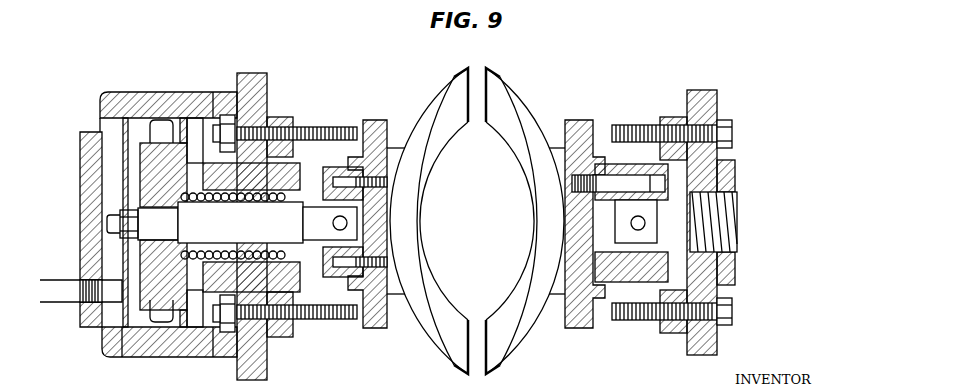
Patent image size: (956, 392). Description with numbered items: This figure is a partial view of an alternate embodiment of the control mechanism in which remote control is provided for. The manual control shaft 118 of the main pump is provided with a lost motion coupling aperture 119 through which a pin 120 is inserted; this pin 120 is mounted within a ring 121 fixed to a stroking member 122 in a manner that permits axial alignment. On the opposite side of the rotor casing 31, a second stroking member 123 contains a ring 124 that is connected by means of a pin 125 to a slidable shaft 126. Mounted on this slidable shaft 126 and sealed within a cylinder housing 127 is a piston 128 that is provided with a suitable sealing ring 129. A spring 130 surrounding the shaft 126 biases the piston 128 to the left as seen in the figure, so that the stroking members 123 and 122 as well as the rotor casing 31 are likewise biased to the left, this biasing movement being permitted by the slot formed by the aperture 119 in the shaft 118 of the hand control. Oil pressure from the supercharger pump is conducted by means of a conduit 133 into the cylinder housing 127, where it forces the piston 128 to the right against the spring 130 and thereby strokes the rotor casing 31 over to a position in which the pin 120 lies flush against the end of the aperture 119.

The rotor casing 31 is at (457, 110).
The manual control shaft 118 is at (663, 235).
The lost motion coupling aperture 119 is at (662, 232).
The pin 120 is at (632, 219).
The ring 121 is at (630, 172).
The stroking member 122 is at (585, 120).
The stroking member 123 is at (388, 120).
The ring 124 is at (339, 280).
The pin 125 is at (333, 223).
The slidable shaft 126 is at (240, 226).
The cylinder housing 127 is at (112, 323).
The piston 128 is at (137, 328).
The sealing ring 129 is at (177, 353).
The spring 130 is at (293, 276).
The conduit 133 is at (68, 297).